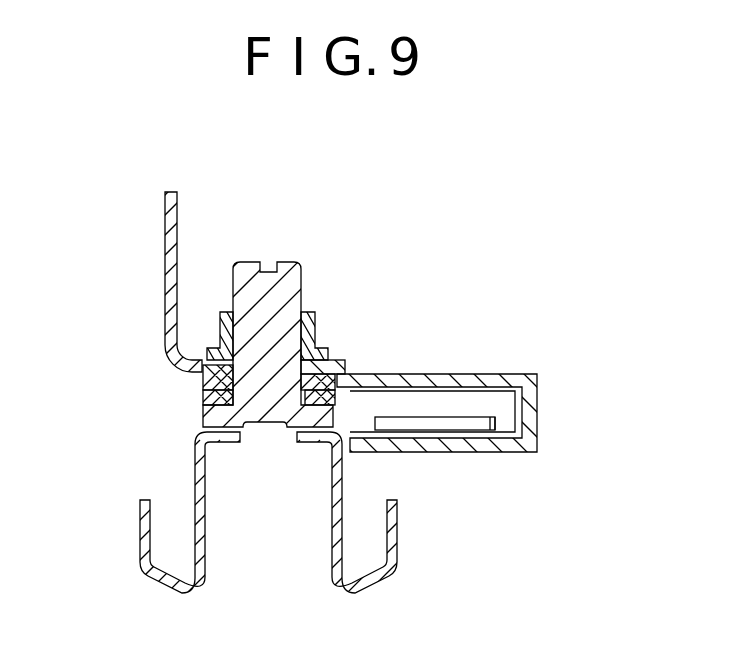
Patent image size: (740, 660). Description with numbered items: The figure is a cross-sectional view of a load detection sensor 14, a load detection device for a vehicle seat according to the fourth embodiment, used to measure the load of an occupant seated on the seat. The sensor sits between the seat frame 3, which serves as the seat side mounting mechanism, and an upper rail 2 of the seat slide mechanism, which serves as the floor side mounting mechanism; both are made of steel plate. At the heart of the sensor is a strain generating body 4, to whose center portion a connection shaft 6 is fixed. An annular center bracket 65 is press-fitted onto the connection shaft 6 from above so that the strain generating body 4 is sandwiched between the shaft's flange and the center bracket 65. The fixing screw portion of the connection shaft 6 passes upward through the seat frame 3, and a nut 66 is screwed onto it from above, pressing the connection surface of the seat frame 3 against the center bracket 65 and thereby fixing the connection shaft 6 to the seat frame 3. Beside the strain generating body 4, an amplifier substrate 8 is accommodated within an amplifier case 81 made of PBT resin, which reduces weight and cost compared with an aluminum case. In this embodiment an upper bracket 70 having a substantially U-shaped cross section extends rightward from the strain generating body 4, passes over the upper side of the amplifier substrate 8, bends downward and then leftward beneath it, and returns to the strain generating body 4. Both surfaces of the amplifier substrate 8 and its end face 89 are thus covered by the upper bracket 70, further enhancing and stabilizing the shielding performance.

The load detection sensor 14 is at (135, 177).
The seat frame 3 is at (167, 298).
The connection shaft 6 is at (287, 280).
The nut 66 is at (315, 320).
The center bracket 65 is at (202, 380).
The strain generating body 4 is at (202, 393).
The upper bracket 70 is at (435, 380).
The amplifier case 81 is at (512, 405).
The amplifier substrate 8 is at (447, 423).
The end face 89 is at (495, 421).
The upper rail 2 is at (393, 548).